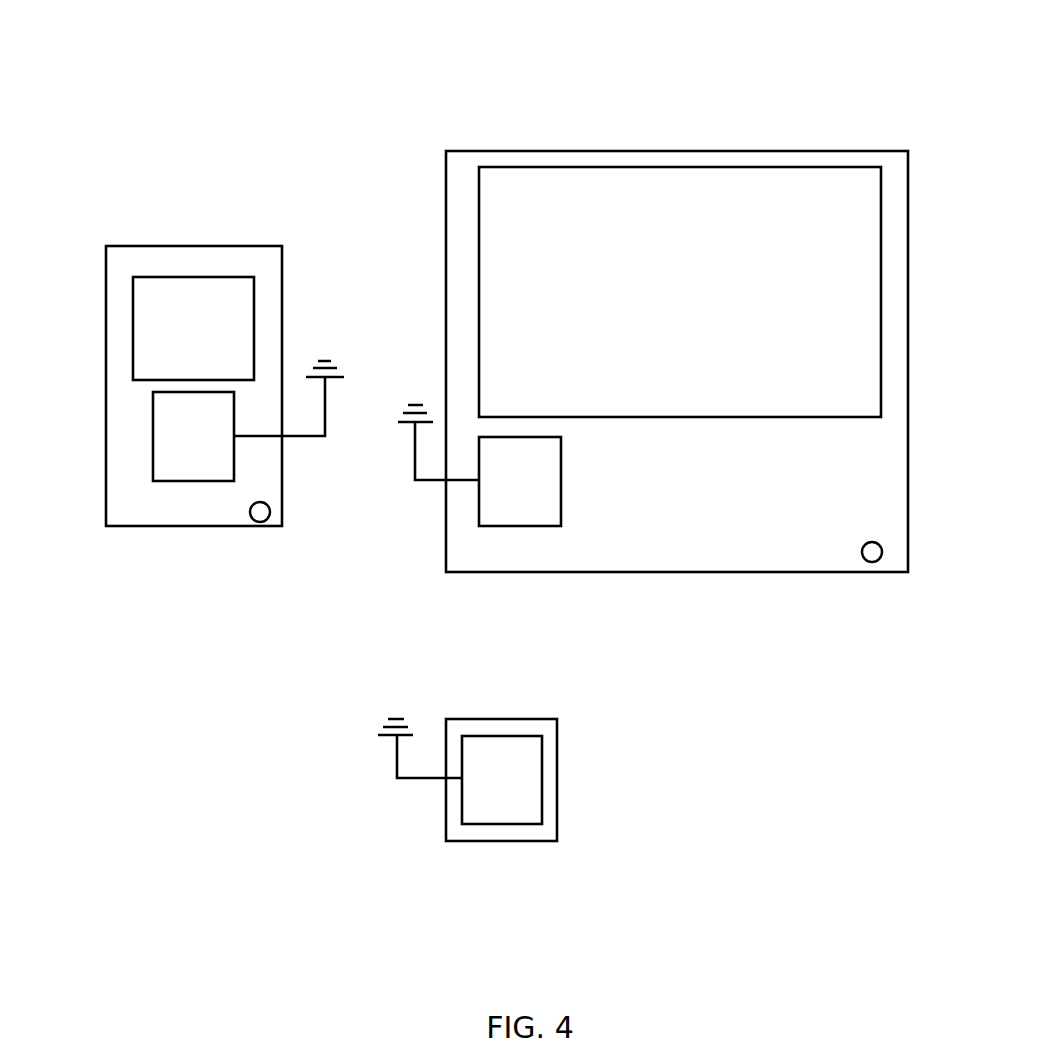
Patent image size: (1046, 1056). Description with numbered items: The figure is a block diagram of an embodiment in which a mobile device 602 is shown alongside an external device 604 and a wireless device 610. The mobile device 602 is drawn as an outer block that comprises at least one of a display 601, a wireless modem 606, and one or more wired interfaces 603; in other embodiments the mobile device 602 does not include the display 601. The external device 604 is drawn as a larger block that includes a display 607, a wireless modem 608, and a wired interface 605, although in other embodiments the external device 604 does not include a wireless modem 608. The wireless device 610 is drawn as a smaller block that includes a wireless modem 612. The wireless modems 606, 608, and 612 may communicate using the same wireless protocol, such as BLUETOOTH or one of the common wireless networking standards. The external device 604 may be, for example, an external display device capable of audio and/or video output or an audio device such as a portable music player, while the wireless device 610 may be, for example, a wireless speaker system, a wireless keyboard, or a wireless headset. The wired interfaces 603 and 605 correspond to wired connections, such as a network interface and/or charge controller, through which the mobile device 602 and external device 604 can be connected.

The display 601 is at (237, 277).
The mobile device 602 is at (182, 224).
The wired interface 603 is at (262, 522).
The external device 604 is at (866, 72).
The wired interface 605 is at (870, 562).
The wireless modem 606 is at (153, 405).
The display 607 is at (591, 167).
The wireless modem 608 is at (518, 527).
The wireless device 610 is at (561, 700).
The wireless modem 612 is at (542, 786).